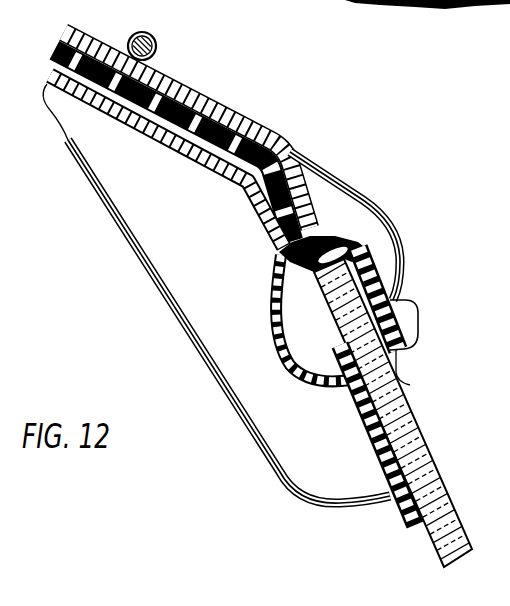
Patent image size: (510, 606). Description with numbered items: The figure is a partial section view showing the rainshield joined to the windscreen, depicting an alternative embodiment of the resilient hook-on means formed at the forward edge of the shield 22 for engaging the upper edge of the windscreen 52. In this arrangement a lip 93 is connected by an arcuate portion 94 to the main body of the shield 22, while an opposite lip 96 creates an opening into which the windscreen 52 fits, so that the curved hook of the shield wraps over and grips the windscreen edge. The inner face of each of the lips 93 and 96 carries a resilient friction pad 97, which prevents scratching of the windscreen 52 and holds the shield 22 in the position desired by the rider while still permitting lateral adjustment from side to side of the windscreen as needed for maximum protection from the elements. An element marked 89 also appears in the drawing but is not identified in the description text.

The shield 22 is at (228, 104).
The snap fastener 89 is at (151, 34).
The arcuate portion 94 is at (275, 338).
The windscreen 52 is at (450, 520).
The resilient friction pad 97 is at (352, 387).
The lip 96 is at (395, 292).
The lip 93 is at (358, 428).